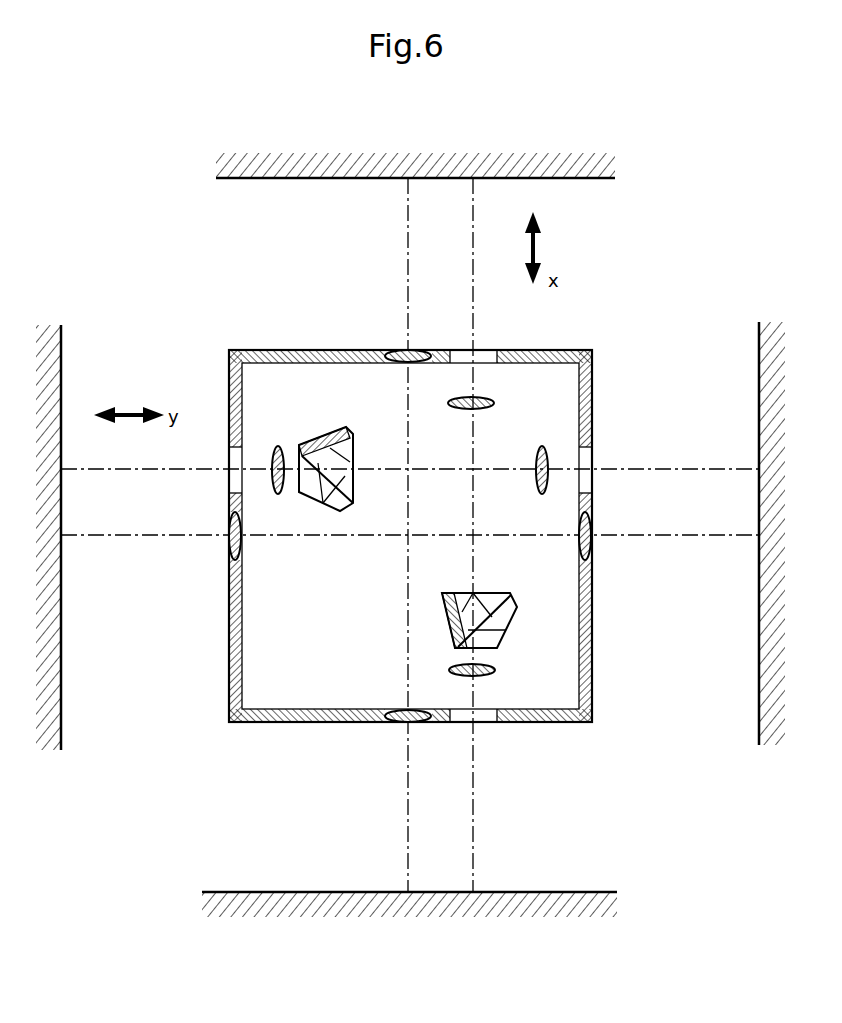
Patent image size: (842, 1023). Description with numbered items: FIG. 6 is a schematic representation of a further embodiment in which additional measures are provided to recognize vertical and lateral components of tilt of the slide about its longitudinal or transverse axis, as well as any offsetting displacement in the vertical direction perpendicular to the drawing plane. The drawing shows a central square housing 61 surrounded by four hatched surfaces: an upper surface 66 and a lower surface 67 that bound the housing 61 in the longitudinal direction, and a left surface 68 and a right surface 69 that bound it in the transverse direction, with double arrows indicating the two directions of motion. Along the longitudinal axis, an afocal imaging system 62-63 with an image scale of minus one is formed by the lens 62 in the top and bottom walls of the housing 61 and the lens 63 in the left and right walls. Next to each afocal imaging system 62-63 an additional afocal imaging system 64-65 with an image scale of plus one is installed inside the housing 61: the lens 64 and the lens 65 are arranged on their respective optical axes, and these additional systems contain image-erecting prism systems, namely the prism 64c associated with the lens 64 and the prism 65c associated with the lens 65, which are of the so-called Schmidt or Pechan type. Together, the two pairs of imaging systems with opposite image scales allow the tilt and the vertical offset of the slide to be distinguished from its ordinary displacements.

The frame / housing of the optical sensor unit 61 is at (612, 391).
The afocal imaging system 62 is at (398, 350).
The afocal imaging system 63 is at (229, 544).
The additional afocal imaging system 64 is at (279, 446).
The image-erecting prism system 64c is at (348, 430).
The additional afocal imaging system 65 is at (494, 403).
The image-erecting prism system 65c is at (517, 610).
The upper reference surface (x-direction) 66 is at (578, 180).
The lower reference surface (x-direction) 67 is at (592, 892).
The left reference surface (y-direction) 68 is at (62, 356).
The right reference surface (y-direction) 69 is at (758, 343).